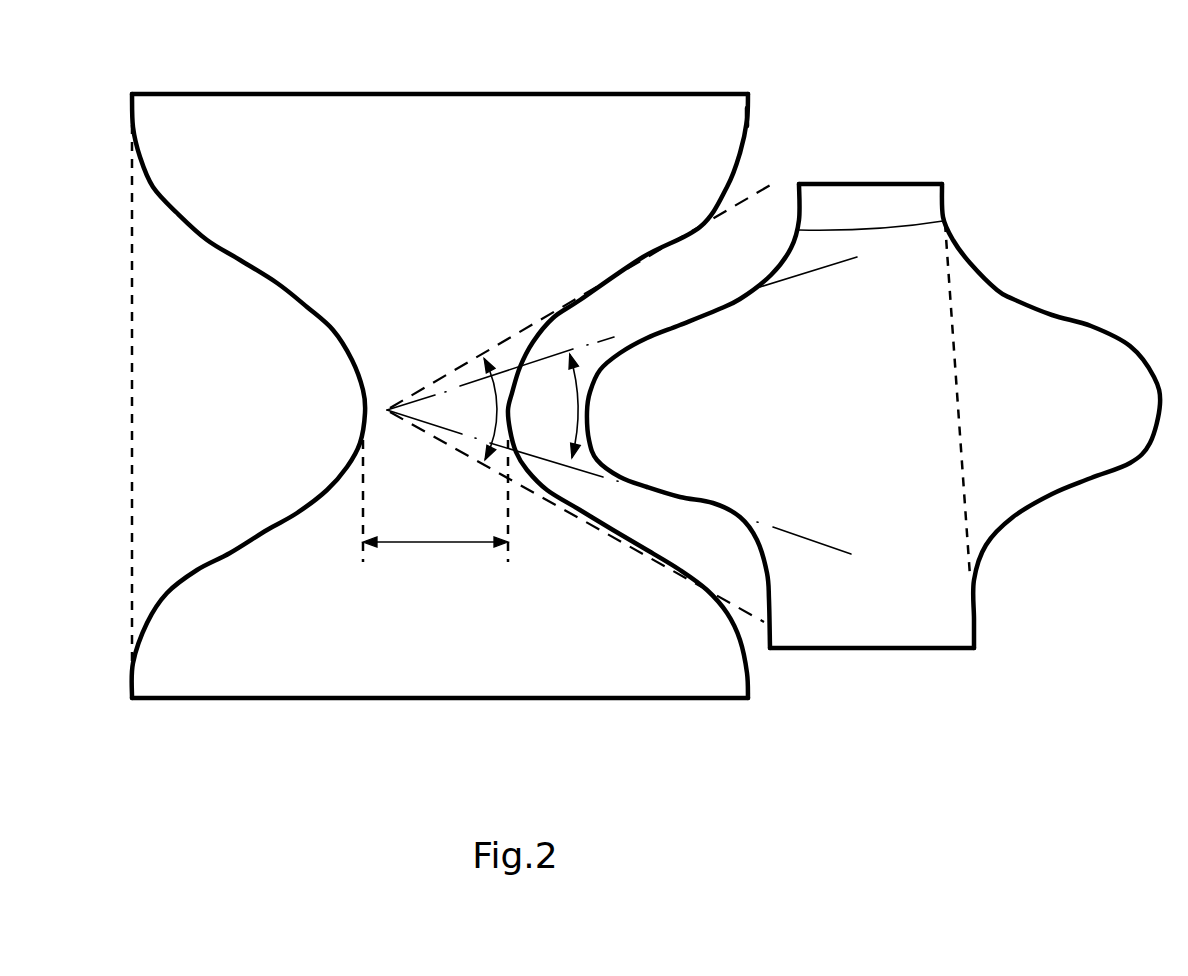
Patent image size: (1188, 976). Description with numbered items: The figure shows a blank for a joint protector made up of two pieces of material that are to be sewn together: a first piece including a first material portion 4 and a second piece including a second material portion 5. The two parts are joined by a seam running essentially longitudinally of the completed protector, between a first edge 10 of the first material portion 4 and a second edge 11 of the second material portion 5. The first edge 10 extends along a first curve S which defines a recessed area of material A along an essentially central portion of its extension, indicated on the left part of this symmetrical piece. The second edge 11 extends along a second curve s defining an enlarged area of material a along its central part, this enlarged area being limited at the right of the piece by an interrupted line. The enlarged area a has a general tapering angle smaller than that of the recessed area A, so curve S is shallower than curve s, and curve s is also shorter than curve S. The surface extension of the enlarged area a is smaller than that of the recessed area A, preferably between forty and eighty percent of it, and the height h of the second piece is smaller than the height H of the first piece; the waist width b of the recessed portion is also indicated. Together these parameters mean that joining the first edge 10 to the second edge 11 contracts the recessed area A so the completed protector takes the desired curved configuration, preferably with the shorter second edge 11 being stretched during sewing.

The first material portion 4 is at (448, 84).
The second material portion 5 is at (812, 170).
The first edge 10 is at (747, 126).
The second edge 11 is at (943, 221).
The curve S is at (643, 255).
The curve s is at (700, 321).
The height of the first piece of material H is at (111, 395).
The height of the second piece of material h is at (948, 399).
The recessed area of material A is at (257, 430).
The enlarged area of material a is at (1040, 424).
The waist width b is at (435, 501).